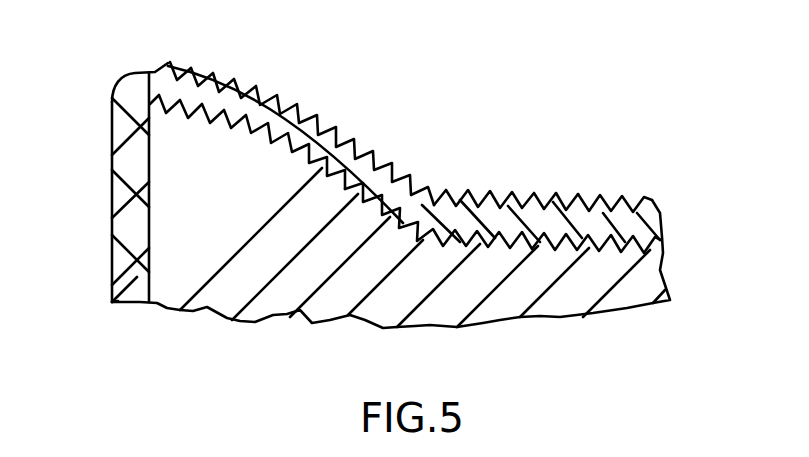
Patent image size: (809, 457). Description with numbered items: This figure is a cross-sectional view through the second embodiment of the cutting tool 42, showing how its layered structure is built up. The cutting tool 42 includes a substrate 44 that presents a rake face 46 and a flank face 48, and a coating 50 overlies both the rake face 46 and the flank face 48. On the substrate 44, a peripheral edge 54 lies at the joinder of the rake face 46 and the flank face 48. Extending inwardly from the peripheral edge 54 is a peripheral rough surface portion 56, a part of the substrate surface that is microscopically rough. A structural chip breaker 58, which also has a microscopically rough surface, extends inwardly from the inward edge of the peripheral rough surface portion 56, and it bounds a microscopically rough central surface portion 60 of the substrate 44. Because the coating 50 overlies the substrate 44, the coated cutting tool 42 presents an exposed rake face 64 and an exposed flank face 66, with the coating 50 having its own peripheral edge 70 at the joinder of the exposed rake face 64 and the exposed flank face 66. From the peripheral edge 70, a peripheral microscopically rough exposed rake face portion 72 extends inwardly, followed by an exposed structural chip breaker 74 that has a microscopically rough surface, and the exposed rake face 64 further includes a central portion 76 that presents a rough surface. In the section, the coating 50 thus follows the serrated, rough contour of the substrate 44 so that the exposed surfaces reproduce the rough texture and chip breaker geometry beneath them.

The cutting tool 42 is at (600, 93).
The substrate 44 is at (657, 278).
The rake face 46 is at (590, 200).
The flank face 48 is at (113, 301).
The coating 50 is at (123, 237).
The peripheral edge 54 is at (150, 104).
The peripheral rough surface portion 56 is at (113, 160).
The structural chip breaker 58 is at (365, 187).
The central surface portion 60 is at (632, 210).
The exposed rake face 64 is at (488, 192).
The exposed flank face 66 is at (111, 207).
The peripheral edge 70 is at (135, 75).
The peripheral microscopically rough exposed rake face portion 72 is at (186, 64).
The exposed structural chip breaker 74 is at (336, 124).
The central portion 76 is at (558, 193).